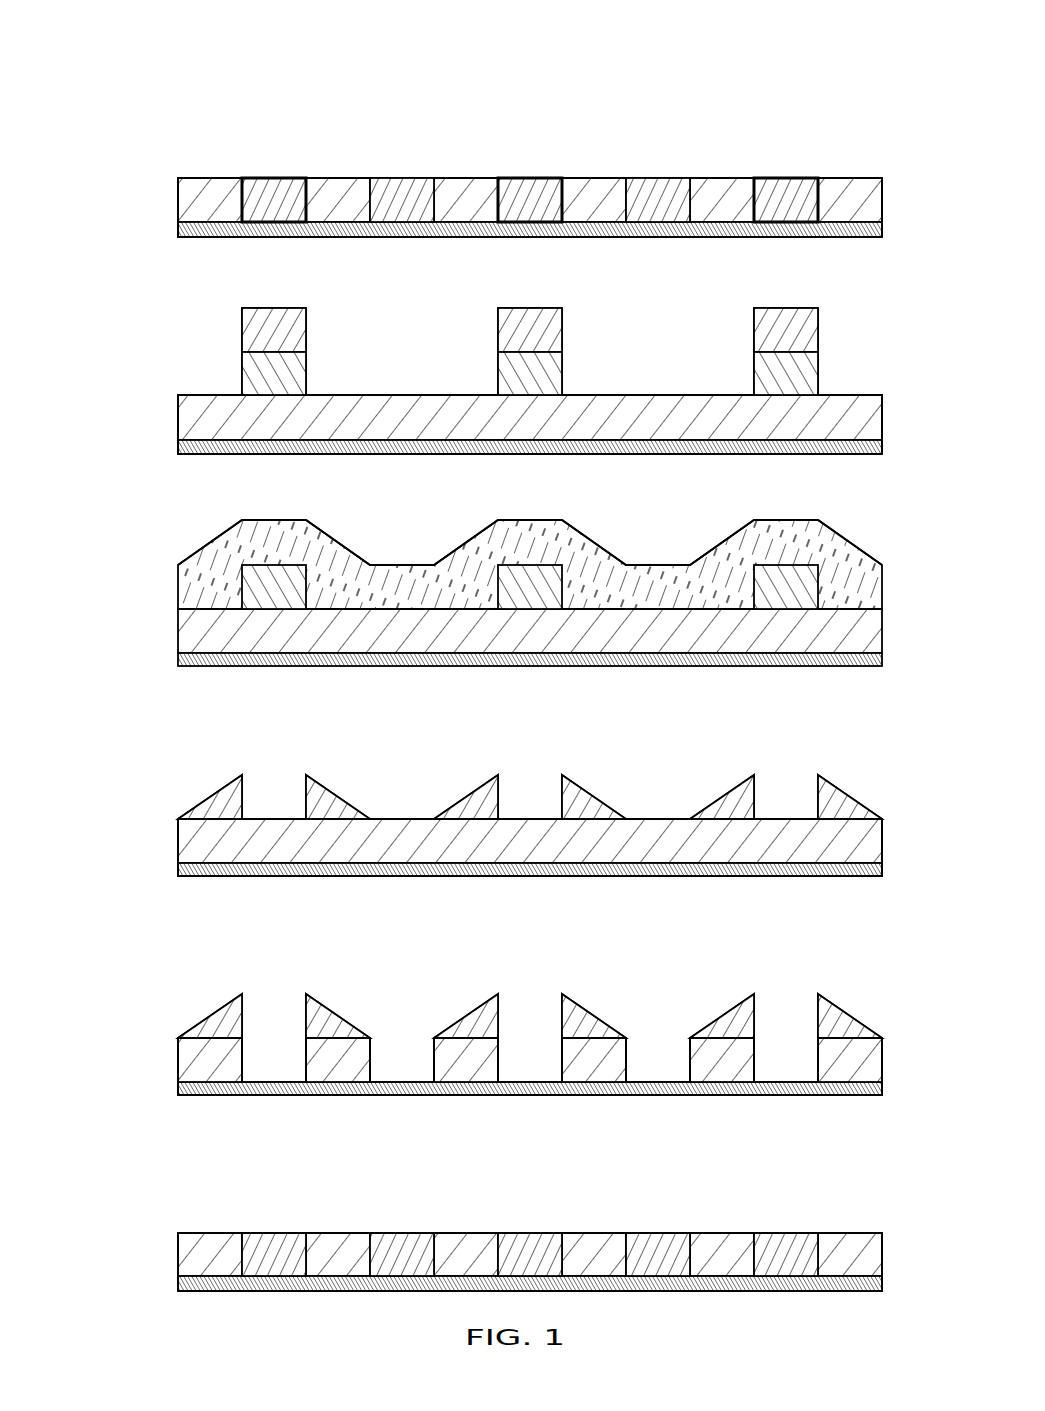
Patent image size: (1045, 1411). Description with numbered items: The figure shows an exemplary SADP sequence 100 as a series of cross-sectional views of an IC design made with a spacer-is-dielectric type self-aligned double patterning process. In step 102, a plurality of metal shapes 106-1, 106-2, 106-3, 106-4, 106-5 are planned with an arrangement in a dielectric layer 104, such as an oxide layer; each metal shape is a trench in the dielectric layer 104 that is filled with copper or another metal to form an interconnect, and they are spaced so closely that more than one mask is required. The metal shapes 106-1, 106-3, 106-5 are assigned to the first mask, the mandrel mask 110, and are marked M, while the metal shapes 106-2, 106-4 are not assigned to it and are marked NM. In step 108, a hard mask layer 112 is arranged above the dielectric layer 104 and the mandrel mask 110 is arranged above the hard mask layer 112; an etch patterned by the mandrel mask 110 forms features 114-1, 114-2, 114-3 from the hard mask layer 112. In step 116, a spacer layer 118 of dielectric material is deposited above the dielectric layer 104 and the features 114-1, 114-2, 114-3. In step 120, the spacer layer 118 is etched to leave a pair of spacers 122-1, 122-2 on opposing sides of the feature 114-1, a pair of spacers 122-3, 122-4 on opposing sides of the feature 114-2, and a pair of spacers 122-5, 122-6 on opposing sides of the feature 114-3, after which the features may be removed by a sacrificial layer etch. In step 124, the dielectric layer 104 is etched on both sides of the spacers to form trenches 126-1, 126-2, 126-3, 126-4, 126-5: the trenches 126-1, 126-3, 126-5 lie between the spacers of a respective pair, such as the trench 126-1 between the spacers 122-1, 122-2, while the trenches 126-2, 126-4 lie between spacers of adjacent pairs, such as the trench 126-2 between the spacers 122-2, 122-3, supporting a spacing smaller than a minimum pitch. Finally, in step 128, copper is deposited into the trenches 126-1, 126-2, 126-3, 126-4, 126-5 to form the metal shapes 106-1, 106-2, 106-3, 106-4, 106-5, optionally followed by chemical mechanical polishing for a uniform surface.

The SADP sequence 100 is at (827, 60).
The step 102 is at (160, 85).
The dielectric layer 104 is at (168, 202).
The metal shape 106-1 is at (308, 165).
The metal shape 106-2 is at (436, 165).
The metal shape 106-3 is at (564, 165).
The metal shape 106-4 is at (692, 165).
The metal shape 106-5 is at (820, 165).
The step 108 is at (148, 358).
The mandrel mask 110 is at (235, 322).
The hard mask layer 112 is at (235, 370).
The feature 114-1 is at (308, 372).
The feature 114-2 is at (564, 372).
The feature 114-3 is at (820, 372).
The step 116 is at (147, 585).
The spacer layer 118 is at (198, 530).
The step 120 is at (115, 803).
The spacer 122-1 is at (242, 776).
The spacer 122-2 is at (320, 780).
The spacer 122-3 is at (472, 798).
The spacer 122-4 is at (576, 787).
The spacer 122-5 is at (726, 797).
The spacer 122-6 is at (838, 790).
The step 124 is at (140, 1018).
The trench 126-1 is at (272, 1015).
The trench 126-2 is at (400, 1015).
The trench 126-3 is at (528, 1015).
The trench 126-4 is at (655, 1020).
The trench 126-5 is at (785, 1020).
The step 128 is at (150, 1210).